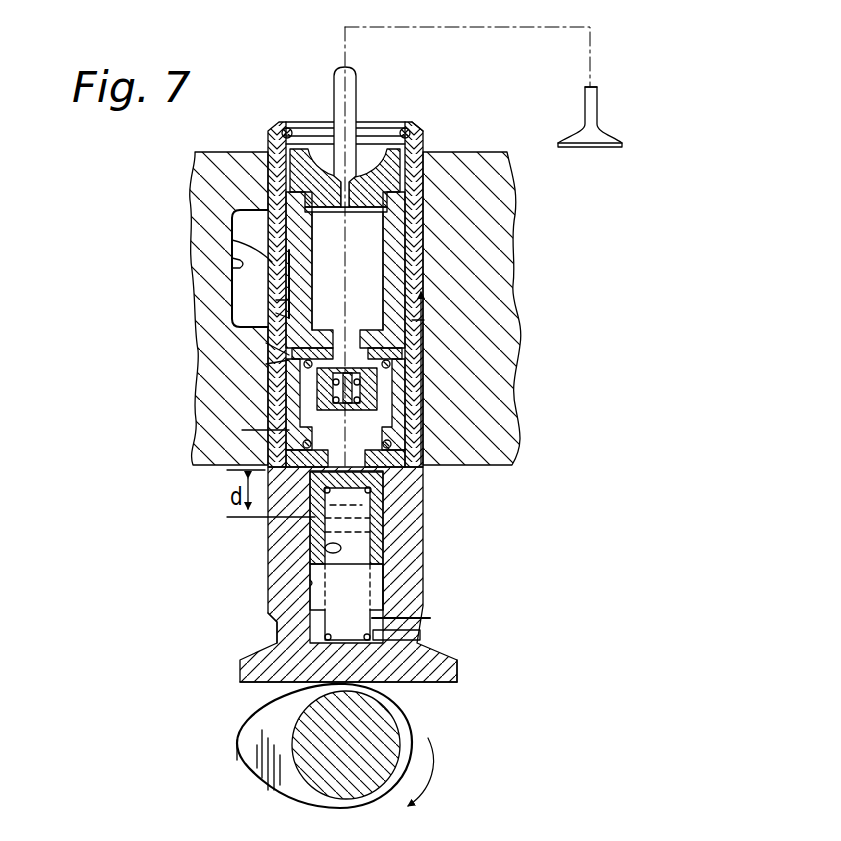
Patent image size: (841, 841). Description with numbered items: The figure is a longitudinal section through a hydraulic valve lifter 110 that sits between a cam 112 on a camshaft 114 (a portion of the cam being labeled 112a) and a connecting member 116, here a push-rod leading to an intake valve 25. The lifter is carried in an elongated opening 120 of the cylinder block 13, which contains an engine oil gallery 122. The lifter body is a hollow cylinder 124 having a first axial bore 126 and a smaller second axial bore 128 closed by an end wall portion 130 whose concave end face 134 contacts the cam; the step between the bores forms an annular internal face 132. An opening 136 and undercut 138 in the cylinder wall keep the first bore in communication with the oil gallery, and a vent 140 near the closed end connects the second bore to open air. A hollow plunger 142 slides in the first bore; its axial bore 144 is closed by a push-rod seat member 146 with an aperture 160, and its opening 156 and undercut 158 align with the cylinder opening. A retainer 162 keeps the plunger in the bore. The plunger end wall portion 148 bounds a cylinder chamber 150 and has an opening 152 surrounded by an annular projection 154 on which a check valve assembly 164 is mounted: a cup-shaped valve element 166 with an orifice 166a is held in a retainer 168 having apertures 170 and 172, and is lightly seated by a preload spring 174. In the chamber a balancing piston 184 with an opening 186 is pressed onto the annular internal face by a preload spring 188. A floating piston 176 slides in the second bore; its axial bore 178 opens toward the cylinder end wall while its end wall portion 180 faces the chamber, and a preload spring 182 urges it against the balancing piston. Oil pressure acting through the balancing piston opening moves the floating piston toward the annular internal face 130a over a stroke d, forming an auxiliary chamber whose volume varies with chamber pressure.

The hydraulic valve lifter 110 is at (276, 115).
The retainer 162 is at (290, 128).
The connecting member 116 is at (358, 94).
The push-rod seat member 146 is at (366, 160).
The elongated opening 120 is at (424, 134).
The cylinder block 13 is at (498, 152).
The intake valve 25 is at (589, 149).
The undercut 158 is at (232, 240).
The engine oil gallery 122 is at (236, 263).
The opening 156 is at (276, 300).
The opening 136 is at (276, 313).
The undercut 138 is at (266, 343).
The end wall portion 148 is at (266, 364).
The cup-shaped valve element 166 is at (302, 374).
The retainer 168 is at (304, 402).
The cylinder chamber 150 is at (242, 430).
The balancing piston 184 is at (302, 444).
The aperture 160 is at (345, 213).
The first axial bore 126 is at (412, 248).
The hollow plunger 142 is at (425, 297).
The axial bore 144 is at (425, 320).
The opening 152 is at (368, 330).
The orifice 166a is at (343, 350).
The annular projection 154 is at (404, 352).
The apertures 170 is at (392, 368).
The preload spring 174 is at (378, 388).
The check valve assembly 164 is at (400, 400).
The apertures 172 is at (400, 428).
The preload spring 188 is at (392, 444).
The annular internal face 132 is at (426, 490).
The opening 186 is at (426, 512).
The end wall portion 180 is at (426, 541).
The hollow cylinder 124 is at (432, 573).
The preload spring 182 is at (424, 608).
The vent 140 is at (422, 626).
The floating piston 176 is at (312, 510).
The axial bore 178 is at (325, 548).
The second axial bore 128 is at (310, 583).
The annular internal face 130a is at (282, 622).
The end wall portion 130 is at (242, 668).
The end face 134 is at (431, 684).
The cam lobe 112a is at (236, 752).
The camshaft 114 is at (304, 786).
The cam 112 is at (414, 771).